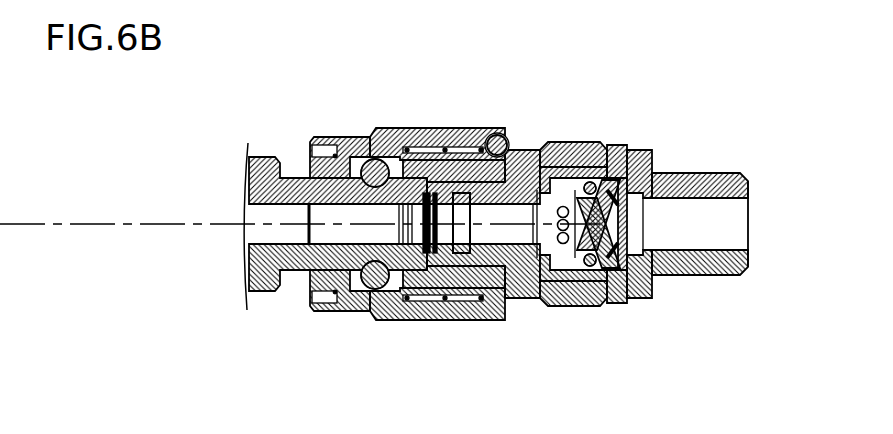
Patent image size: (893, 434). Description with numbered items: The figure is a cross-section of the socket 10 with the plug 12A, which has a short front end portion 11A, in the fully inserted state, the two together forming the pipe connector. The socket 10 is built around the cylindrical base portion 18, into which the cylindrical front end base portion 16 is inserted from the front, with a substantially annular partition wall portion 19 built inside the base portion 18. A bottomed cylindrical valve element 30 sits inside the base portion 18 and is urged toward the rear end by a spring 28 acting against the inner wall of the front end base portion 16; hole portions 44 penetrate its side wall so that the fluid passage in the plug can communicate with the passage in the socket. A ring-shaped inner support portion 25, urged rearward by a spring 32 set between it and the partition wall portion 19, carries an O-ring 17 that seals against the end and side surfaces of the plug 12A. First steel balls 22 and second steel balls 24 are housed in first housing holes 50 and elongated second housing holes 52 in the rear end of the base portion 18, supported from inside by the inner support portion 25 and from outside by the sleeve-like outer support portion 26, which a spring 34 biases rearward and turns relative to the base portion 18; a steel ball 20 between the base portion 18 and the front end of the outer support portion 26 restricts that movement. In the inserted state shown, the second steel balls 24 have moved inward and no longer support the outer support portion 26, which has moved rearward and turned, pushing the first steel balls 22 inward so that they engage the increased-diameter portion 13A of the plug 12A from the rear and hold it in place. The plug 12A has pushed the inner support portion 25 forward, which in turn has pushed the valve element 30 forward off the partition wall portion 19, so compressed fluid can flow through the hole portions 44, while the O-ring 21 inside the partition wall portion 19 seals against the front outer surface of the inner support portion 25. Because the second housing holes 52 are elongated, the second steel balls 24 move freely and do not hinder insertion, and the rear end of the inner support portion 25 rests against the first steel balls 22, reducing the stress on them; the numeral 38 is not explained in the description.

The socket 10 is at (487, 81).
The front end portion 11A is at (423, 318).
The plug 12A is at (267, 267).
The increased-diameter portion 13A is at (347, 320).
The front end base portion 16 is at (672, 160).
The O-ring 17 is at (428, 128).
The base portion 18 is at (580, 142).
The partition wall portion 19 is at (530, 307).
The steel ball 20 is at (497, 134).
The O-ring 21 is at (515, 150).
The first steel balls 22 is at (400, 320).
The second steel balls 24 is at (368, 137).
The inner support portion 25 is at (440, 318).
The outer support portion 26 is at (458, 128).
The spring 28 is at (615, 300).
The valve element 30 is at (603, 310).
The spring 32 is at (510, 310).
The spring 34 is at (478, 318).
The threaded connection portion 38 is at (702, 218).
The hole portions 44 is at (607, 147).
The first housing holes 50 is at (370, 320).
The second housing holes 52 is at (393, 129).